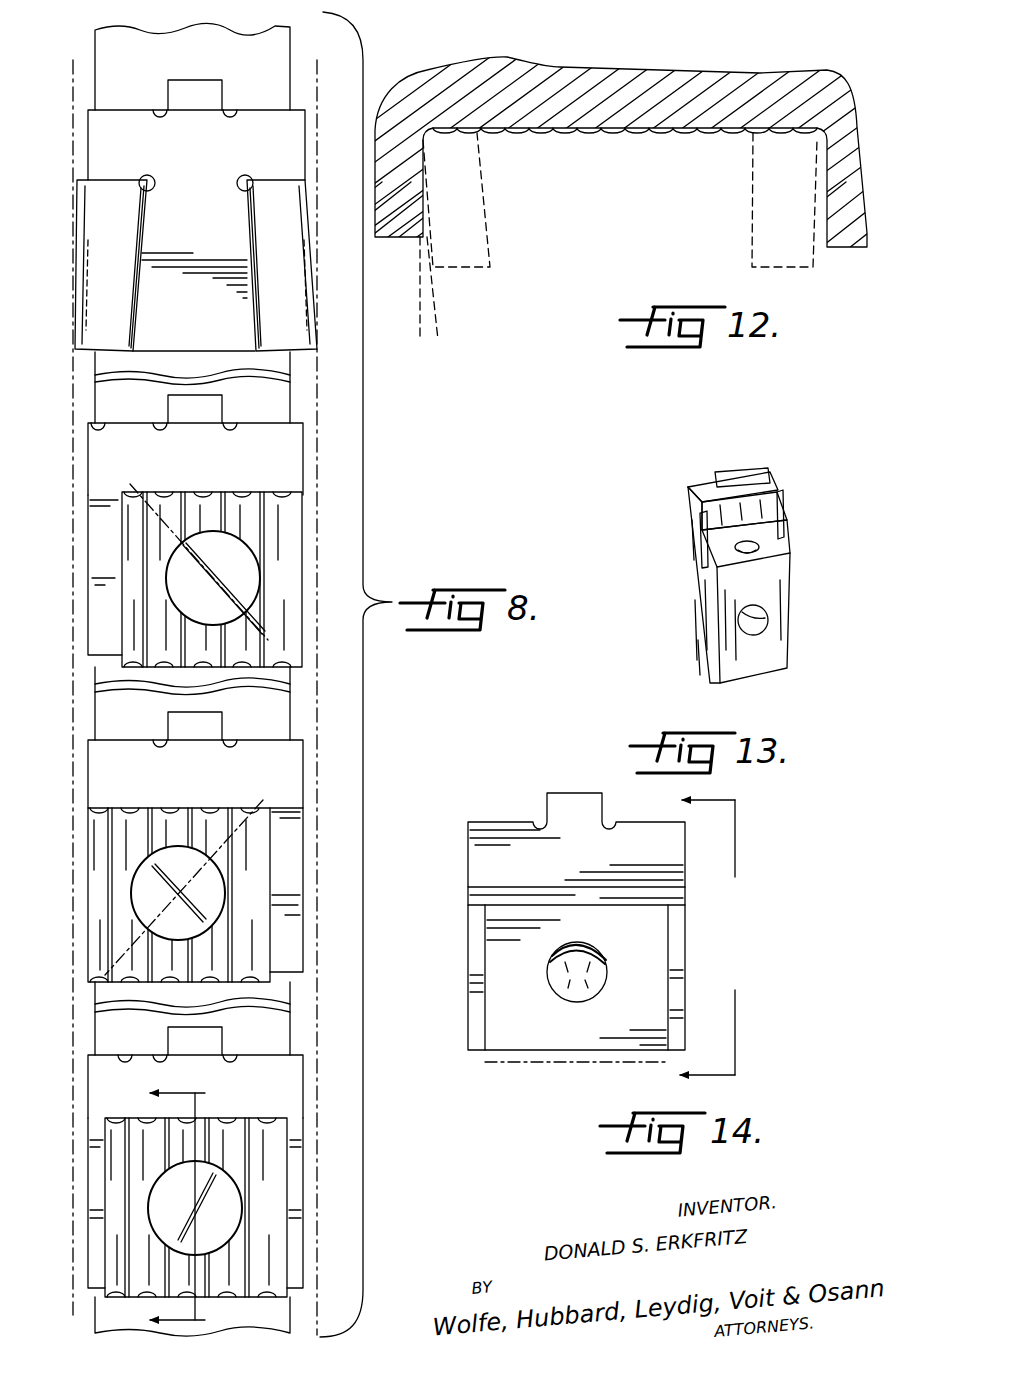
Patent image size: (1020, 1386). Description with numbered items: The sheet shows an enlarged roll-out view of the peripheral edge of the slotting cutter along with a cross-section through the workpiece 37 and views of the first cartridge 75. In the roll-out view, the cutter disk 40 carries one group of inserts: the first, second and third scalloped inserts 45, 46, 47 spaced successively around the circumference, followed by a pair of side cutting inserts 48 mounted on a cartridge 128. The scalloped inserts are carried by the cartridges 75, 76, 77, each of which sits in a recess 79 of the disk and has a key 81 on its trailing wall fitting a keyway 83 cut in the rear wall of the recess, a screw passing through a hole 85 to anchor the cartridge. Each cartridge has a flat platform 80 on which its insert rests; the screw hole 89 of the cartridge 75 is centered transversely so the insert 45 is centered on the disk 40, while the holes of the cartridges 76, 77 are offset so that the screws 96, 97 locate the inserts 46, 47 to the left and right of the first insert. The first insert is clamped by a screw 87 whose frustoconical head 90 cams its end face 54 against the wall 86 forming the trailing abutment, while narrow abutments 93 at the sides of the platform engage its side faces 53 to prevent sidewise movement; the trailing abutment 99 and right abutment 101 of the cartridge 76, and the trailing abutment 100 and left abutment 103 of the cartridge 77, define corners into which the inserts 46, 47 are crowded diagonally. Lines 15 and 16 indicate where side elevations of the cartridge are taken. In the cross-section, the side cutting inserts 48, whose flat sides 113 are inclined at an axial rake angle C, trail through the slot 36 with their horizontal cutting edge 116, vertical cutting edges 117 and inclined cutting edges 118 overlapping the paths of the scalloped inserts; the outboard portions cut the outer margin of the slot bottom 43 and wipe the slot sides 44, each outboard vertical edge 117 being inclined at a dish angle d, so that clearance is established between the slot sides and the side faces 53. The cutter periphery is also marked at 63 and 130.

In FIG. 8, the section line 16— 16 is at (198, 1208).
In FIG. 14, the section line 15— 15 is at (735, 937).
In FIG. 12, the slot 36 is at (810, 236).
In FIG. 12, the workpiece 37 is at (570, 68).
In FIG. 8, the disk 40 is at (275, 70).
In FIG. 12, the bottom of the slot 43 is at (640, 130).
In FIG. 8, the sides of the slot 44 is at (312, 1022).
In FIG. 12, the sides of the slot 44 is at (430, 216).
In FIG. 8, the first scalloped insert 45 is at (120, 1212).
In FIG. 14, the first scalloped insert 45 is at (576, 1058).
In FIG. 8, the second scalloped insert 46 is at (115, 870).
In FIG. 8, the third scalloped insert 47 is at (140, 566).
In FIG. 8, the side cutting inserts 48 is at (108, 272).
In FIG. 12, the side cutting inserts 48 is at (465, 258).
In FIG. 8, the side faces 53 is at (120, 613).
In FIG. 8, the end faces 54 is at (150, 495).
In FIG. 8, the lower edge 63 is at (245, 668).
In FIG. 13, the first cartridge 75 is at (700, 622).
In FIG. 14, the first cartridge 75 is at (515, 832).
In FIG. 8, the second cartridge 76 is at (277, 790).
In FIG. 8, the third cartridge 77 is at (277, 468).
In FIG. 8, the recesses 79 is at (95, 425).
In FIG. 13, the platform 80 is at (780, 550).
In FIG. 14, the platform 80 is at (518, 1042).
In FIG. 8, the key 81 is at (210, 410).
In FIG. 13, the key 81 is at (745, 472).
In FIG. 14, the key 81 is at (603, 770).
In FIG. 8, the keyway 83 is at (180, 400).
In FIG. 13, the hole 85 is at (768, 620).
In FIG. 8, the wall 86 is at (285, 1102).
In FIG. 13, the wall 86 is at (752, 500).
In FIG. 14, the wall 86 is at (518, 888).
In FIG. 8, the screw 87 is at (228, 1205).
In FIG. 13, the screw hole 89 is at (742, 555).
In FIG. 14, the screw hole 89 is at (566, 988).
In FIG. 8, the head 90 is at (163, 1236).
In FIG. 8, the abutments 93 is at (90, 1175).
In FIG. 13, the abutments 93 is at (788, 508).
In FIG. 14, the abutments 93 is at (472, 962).
In FIG. 8, the screw 96 is at (218, 897).
In FIG. 8, the screw 97 is at (243, 568).
In FIG. 8, the trailing abutment 99 is at (186, 780).
In FIG. 8, the trailing abutment 100 is at (195, 494).
In FIG. 8, the second abutment 101 is at (295, 885).
In FIG. 8, the additional abutment 103 is at (98, 538).
In FIG. 8, the sides 113 is at (82, 233).
In FIG. 12, the horizontal cutting edge 116 is at (440, 136).
In FIG. 8, the vertical cutting edges 117 is at (376, 170).
In FIG. 12, the vertical cutting edges 117 is at (430, 230).
In FIG. 12, the inclined cutting edges 118 is at (420, 140).
In FIG. 8, the cartridge 128 is at (104, 127).
In FIG. 8, the end tab 130 is at (172, 84).
In FIG. 8, the axial rake angle C is at (78, 183).
In FIG. 12, the dish angle d is at (395, 338).